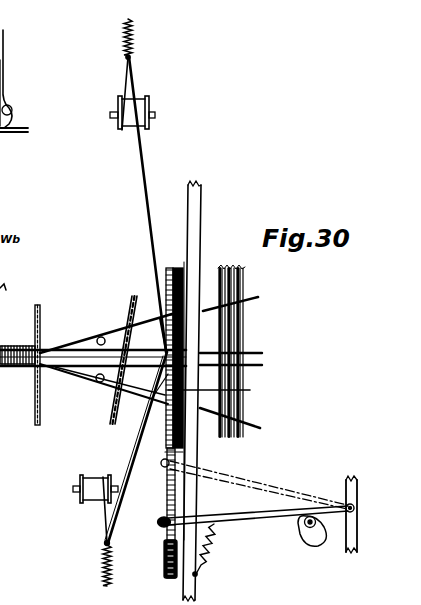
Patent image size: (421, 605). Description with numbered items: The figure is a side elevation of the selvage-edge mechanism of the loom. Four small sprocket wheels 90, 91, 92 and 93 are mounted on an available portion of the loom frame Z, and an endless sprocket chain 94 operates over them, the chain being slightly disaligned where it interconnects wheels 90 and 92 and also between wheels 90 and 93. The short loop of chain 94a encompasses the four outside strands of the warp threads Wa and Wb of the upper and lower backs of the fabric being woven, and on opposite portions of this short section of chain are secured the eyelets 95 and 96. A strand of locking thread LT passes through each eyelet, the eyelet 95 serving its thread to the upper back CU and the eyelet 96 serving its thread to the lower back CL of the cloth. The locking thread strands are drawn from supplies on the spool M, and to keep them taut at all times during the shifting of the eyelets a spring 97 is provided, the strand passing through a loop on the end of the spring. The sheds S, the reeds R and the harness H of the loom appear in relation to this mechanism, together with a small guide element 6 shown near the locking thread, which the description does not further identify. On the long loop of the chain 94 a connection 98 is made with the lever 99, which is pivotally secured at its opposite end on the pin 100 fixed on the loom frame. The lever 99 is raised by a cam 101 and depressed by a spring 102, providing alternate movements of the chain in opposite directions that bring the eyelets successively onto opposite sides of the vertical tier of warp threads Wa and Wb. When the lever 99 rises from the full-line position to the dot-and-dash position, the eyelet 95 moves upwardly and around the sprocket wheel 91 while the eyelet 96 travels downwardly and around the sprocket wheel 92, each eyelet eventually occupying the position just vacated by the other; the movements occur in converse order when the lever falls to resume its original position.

The spool M is at (17, 105).
The spring 97 is at (133, 33).
The locking thread LT is at (140, 170).
The upper back CU is at (13, 346).
The lower back CL is at (93, 369).
The reeds R is at (34, 409).
The sheds S is at (88, 345).
The guide pulley 6 is at (104, 336).
The eyelet 95 is at (166, 348).
The eyelet 96 is at (168, 374).
The sprocket wheel 90 is at (170, 270).
The sprocket wheel 91 is at (184, 262).
The loom frame Z is at (196, 203).
The harness H is at (232, 327).
The warp threads Wa is at (253, 297).
The warp threads Wb is at (262, 353).
The short loop of chain 94a is at (221, 394).
The sprocket wheel 92 is at (184, 450).
The endless sprocket chain 94 is at (166, 497).
The sprocket wheel 93 is at (164, 572).
The connection 98 is at (162, 529).
The lever 99 is at (258, 481).
The pin 100 is at (348, 503).
The cam 101 is at (307, 542).
The spring 102 is at (205, 561).